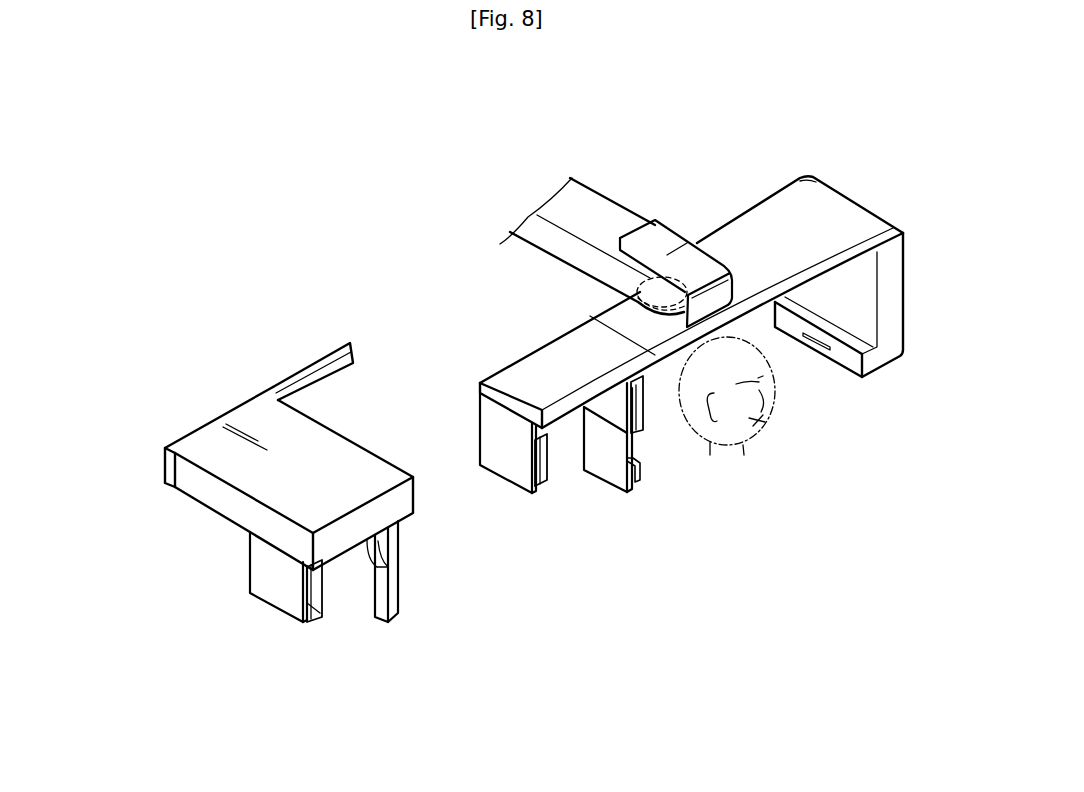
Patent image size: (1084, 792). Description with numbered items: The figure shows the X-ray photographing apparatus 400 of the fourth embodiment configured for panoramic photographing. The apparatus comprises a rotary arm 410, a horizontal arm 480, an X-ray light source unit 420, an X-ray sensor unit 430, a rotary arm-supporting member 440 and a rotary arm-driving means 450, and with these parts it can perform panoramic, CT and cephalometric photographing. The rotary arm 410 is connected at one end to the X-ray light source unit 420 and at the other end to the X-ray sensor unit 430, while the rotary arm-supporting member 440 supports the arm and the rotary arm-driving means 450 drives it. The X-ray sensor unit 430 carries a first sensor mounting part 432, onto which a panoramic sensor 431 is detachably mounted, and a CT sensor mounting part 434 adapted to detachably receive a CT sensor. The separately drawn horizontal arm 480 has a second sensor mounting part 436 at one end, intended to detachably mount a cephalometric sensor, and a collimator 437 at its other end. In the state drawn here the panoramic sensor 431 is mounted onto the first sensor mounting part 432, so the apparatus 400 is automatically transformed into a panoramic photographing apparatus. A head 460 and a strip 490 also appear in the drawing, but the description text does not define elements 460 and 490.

The X-ray photographing apparatus 400 is at (182, 330).
The rotary arm 410 is at (762, 222).
The X-ray light source unit 420 is at (882, 358).
The X-ray sensor unit 430 is at (722, 505).
The panoramic sensor 431 is at (615, 480).
The first sensor mounting part 432 is at (643, 427).
The CT sensor mounting part 434 is at (548, 474).
The second sensor mounting part 436 is at (318, 617).
The collimator 437 is at (397, 602).
The rotary arm-supporting member 440 is at (567, 212).
The rotary arm-driving means 450 is at (663, 293).
The user head 460 is at (772, 408).
The horizontal arm 480 is at (288, 420).
The strap tongue 490 is at (367, 382).